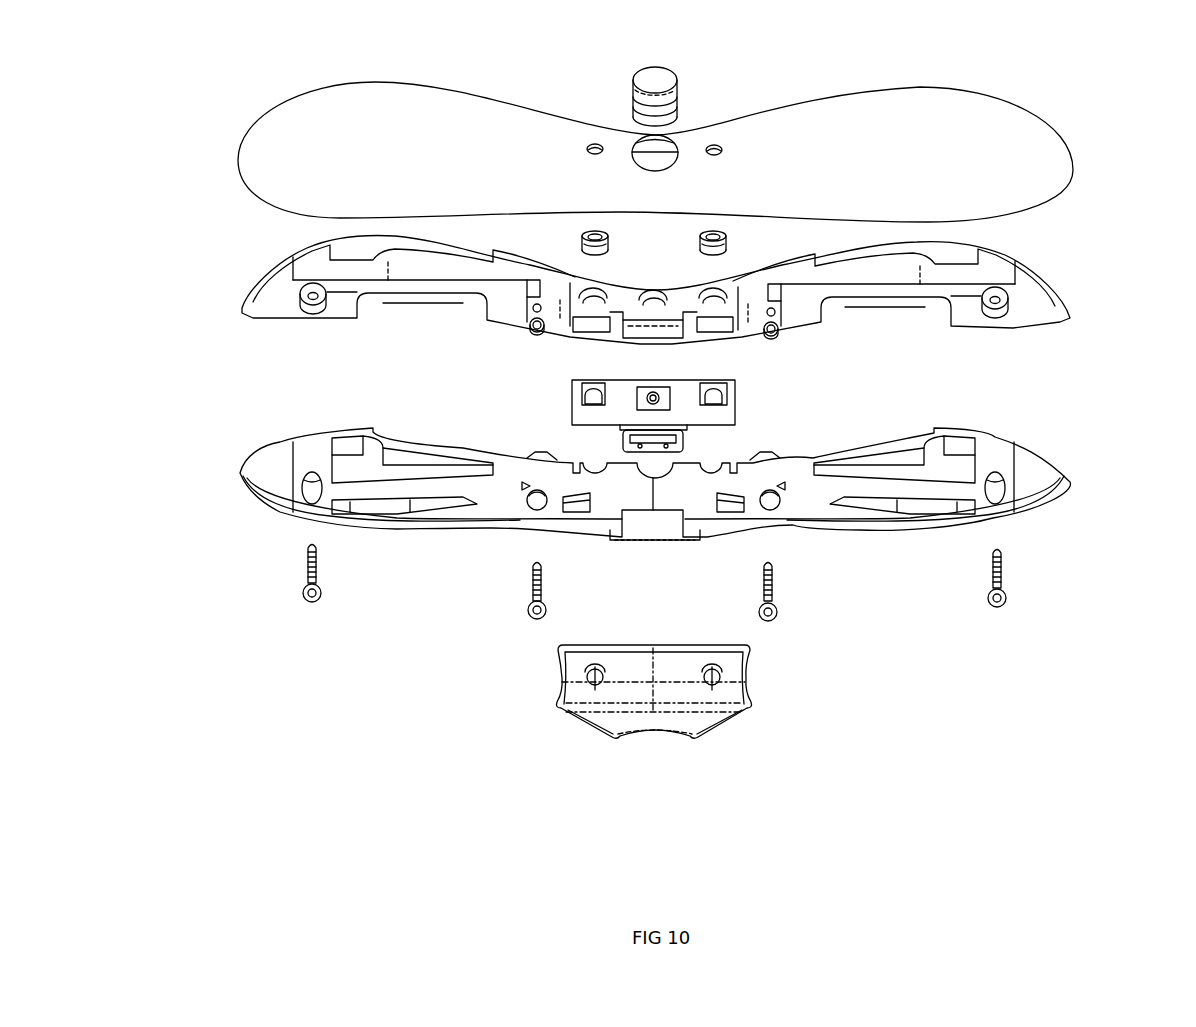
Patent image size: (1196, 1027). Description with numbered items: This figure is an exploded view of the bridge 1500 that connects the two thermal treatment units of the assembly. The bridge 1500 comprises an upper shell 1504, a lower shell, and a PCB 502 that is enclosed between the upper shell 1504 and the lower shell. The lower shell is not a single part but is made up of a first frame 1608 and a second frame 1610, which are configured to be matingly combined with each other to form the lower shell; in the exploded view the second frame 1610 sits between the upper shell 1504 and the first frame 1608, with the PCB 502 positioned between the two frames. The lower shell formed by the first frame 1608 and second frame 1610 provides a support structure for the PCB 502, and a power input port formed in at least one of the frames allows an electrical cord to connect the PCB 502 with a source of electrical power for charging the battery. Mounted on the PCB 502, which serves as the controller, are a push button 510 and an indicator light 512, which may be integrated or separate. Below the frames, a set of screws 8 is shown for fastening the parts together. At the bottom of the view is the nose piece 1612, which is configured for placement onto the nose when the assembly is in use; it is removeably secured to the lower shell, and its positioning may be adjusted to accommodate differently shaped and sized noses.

The bridge 1500 is at (669, 432).
The upper shell 1504 is at (232, 182).
The push button 510 is at (644, 62).
The indicator light 512 is at (740, 239).
The second frame 1610 is at (232, 312).
The PCB 502 is at (746, 404).
The first frame 1608 is at (233, 466).
The screw 8 is at (1016, 585).
The nose piece 1612 is at (658, 742).